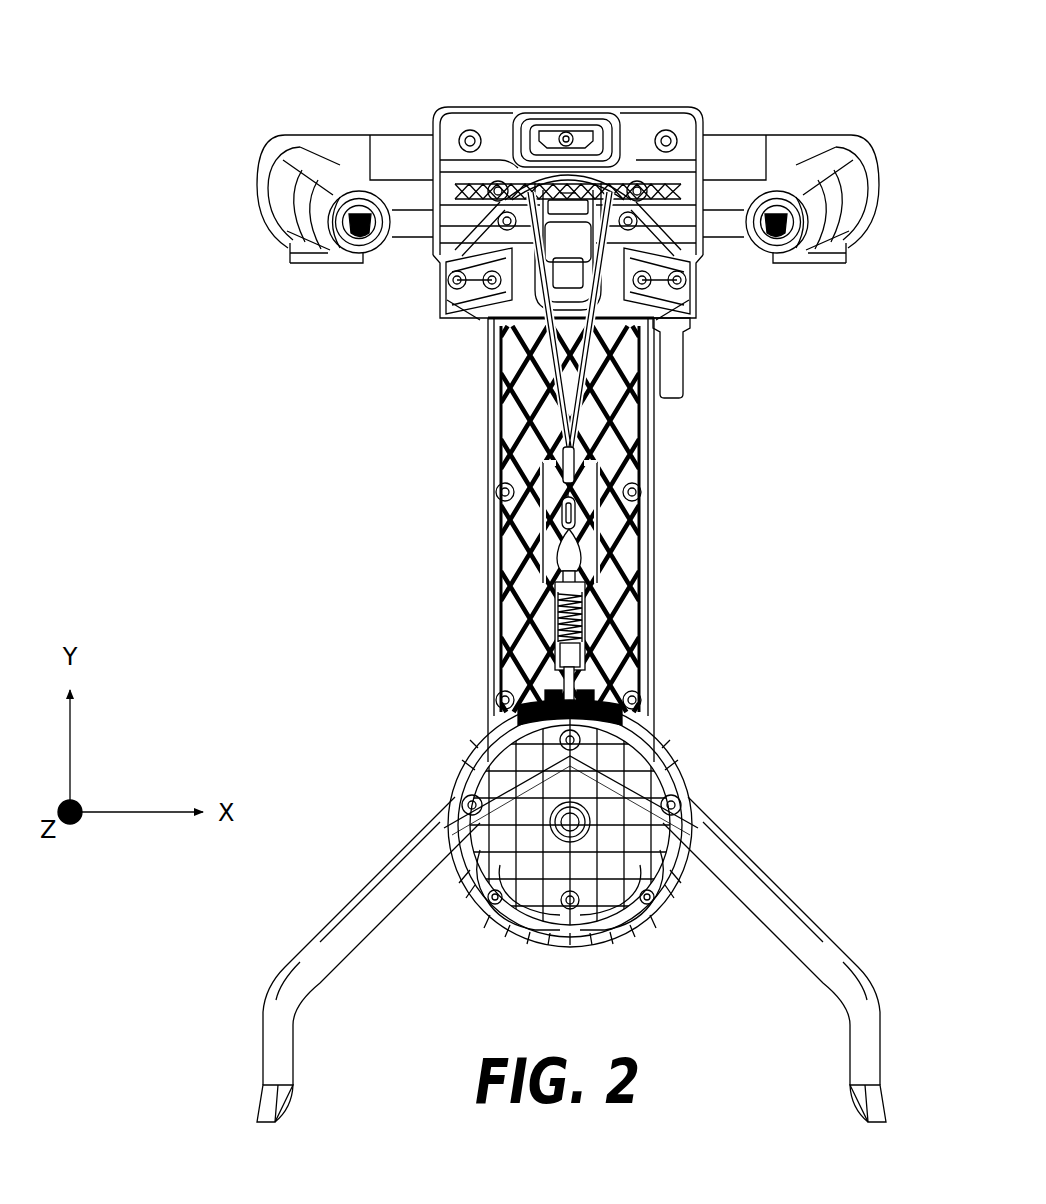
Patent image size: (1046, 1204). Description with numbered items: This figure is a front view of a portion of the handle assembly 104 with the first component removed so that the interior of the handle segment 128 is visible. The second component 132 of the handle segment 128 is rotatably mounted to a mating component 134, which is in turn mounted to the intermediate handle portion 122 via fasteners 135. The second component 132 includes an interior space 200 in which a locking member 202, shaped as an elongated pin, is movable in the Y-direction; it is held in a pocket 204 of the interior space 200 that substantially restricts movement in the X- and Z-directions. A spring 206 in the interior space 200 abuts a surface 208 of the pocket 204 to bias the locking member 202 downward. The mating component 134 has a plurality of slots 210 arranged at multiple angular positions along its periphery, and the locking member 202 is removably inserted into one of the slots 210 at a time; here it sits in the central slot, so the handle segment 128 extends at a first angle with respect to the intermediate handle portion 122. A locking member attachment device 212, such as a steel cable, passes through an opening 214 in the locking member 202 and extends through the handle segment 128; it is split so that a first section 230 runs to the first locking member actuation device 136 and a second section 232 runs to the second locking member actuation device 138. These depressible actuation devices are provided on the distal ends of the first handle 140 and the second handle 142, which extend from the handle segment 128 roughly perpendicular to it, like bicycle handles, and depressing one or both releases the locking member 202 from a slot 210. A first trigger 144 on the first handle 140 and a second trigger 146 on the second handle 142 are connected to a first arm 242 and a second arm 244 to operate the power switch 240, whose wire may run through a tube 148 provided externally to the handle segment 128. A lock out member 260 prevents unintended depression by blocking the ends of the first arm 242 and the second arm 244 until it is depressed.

The handle assembly 104 is at (860, 85).
The intermediate handle portion 122 is at (820, 962).
The handle segment 128 is at (418, 512).
The second component 132 is at (487, 352).
The mating component 134 is at (682, 755).
The fasteners 135 is at (683, 804).
The first locking member actuation device 136 is at (768, 264).
The second locking member actuation device 138 is at (347, 264).
The first handle 140 is at (860, 178).
The second handle 142 is at (263, 188).
The first trigger 144 is at (840, 256).
The second trigger 146 is at (294, 242).
The tube 148 is at (690, 384).
The interior space 200 is at (485, 455).
The locking member 202 is at (596, 670).
The pocket 204 is at (556, 616).
The spring 206 is at (590, 648).
The surface 208 is at (592, 572).
The slots 210 is at (522, 705).
The locking member attachment device 212 is at (572, 496).
The opening 214 is at (560, 570).
The first section 230 is at (664, 135).
The second section 232 is at (446, 120).
The power switch 240 is at (586, 180).
The first arm 242 is at (702, 128).
The second arm 244 is at (470, 150).
The lock out member 260 is at (562, 112).